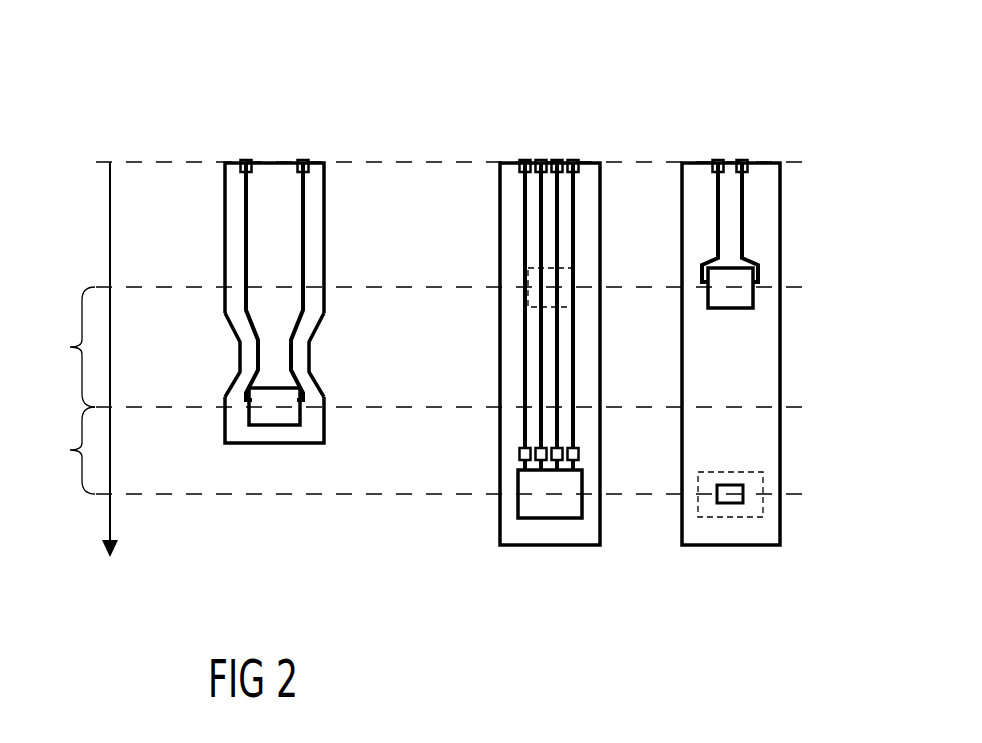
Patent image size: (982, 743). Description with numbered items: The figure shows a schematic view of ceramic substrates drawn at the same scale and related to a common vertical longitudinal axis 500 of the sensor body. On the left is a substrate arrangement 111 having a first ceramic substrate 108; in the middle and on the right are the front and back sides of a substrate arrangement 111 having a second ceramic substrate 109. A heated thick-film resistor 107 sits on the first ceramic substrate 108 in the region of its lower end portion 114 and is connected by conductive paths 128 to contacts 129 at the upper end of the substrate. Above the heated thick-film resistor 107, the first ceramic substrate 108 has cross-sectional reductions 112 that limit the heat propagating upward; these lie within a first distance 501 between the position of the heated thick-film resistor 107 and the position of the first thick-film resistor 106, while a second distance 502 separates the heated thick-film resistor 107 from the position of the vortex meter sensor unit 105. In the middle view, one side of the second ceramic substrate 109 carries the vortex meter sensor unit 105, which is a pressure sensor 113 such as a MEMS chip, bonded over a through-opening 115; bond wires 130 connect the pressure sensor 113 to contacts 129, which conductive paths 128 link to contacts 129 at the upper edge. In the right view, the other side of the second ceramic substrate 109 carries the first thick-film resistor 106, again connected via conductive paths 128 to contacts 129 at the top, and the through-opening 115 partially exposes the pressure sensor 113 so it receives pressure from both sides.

The longitudinal axis 500 is at (110, 338).
The first distance 501 is at (59, 347).
The second distance 502 is at (59, 450).
The vortex meter sensor unit 105 is at (508, 500).
The first thick-film resistor 106 is at (518, 295).
The heated thick-film resistor 107 is at (312, 418).
The first ceramic substrate 108 is at (318, 150).
The second ceramic substrate 109 is at (592, 150).
The substrate arrangement 111 is at (492, 307).
The cross-sectional reductions 112 is at (230, 350).
The pressure sensor 113 is at (547, 550).
The lower end portion 114 is at (276, 308).
The through-opening 115 is at (757, 497).
The conductive paths 128 is at (233, 229).
The contacts 129 is at (301, 150).
The bond wires 130 is at (510, 462).